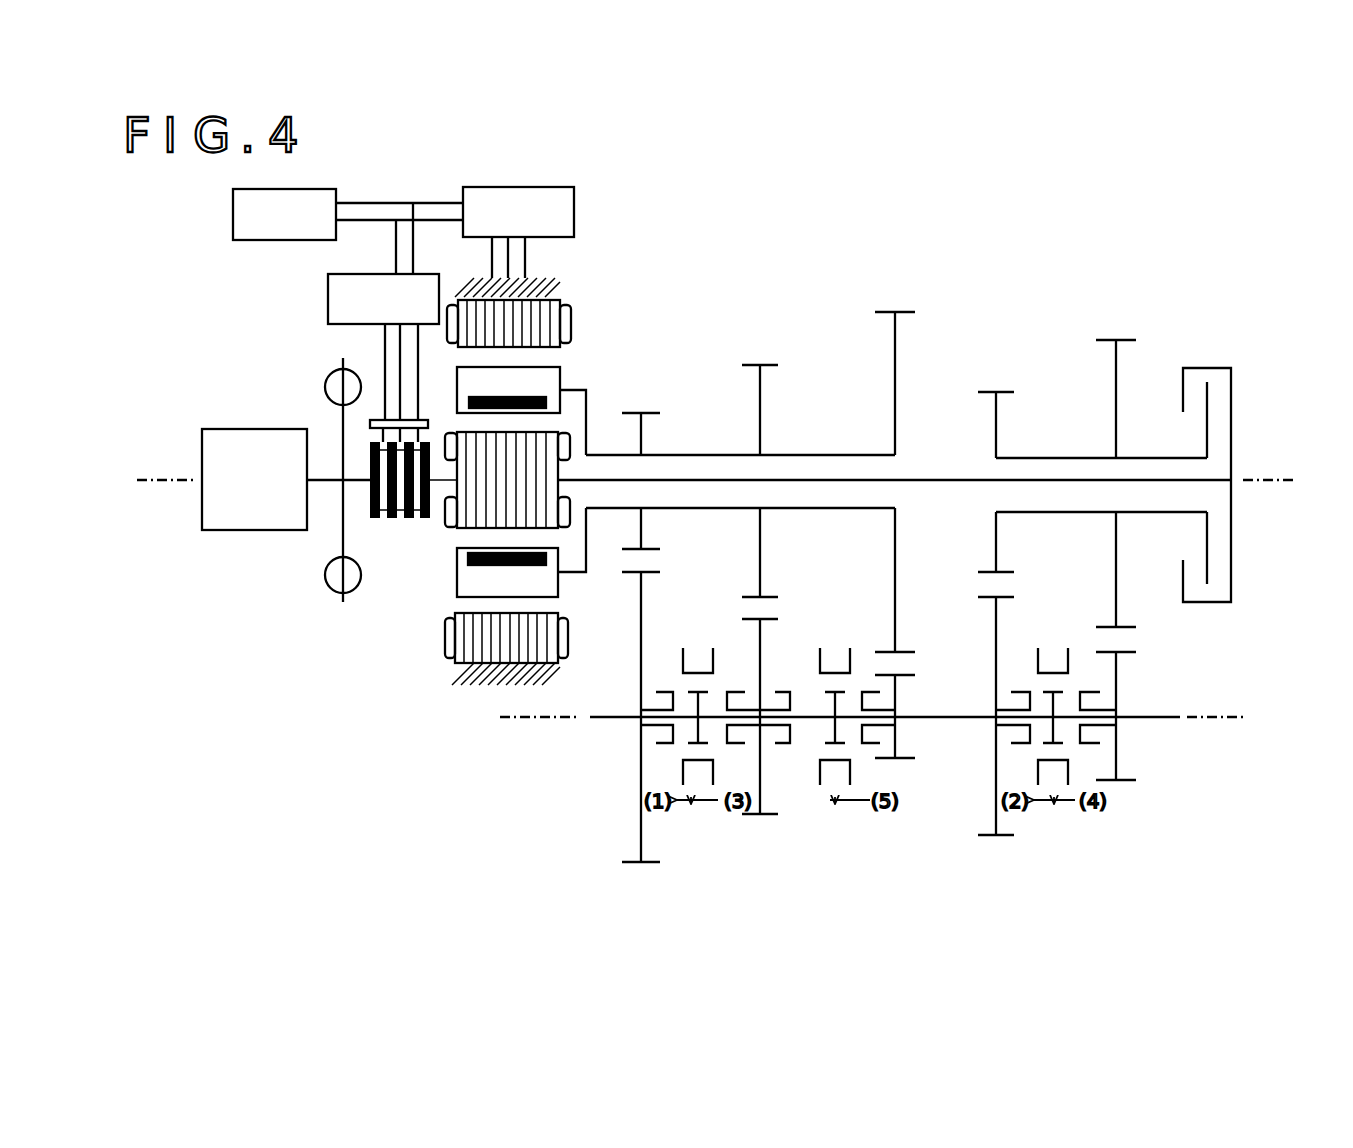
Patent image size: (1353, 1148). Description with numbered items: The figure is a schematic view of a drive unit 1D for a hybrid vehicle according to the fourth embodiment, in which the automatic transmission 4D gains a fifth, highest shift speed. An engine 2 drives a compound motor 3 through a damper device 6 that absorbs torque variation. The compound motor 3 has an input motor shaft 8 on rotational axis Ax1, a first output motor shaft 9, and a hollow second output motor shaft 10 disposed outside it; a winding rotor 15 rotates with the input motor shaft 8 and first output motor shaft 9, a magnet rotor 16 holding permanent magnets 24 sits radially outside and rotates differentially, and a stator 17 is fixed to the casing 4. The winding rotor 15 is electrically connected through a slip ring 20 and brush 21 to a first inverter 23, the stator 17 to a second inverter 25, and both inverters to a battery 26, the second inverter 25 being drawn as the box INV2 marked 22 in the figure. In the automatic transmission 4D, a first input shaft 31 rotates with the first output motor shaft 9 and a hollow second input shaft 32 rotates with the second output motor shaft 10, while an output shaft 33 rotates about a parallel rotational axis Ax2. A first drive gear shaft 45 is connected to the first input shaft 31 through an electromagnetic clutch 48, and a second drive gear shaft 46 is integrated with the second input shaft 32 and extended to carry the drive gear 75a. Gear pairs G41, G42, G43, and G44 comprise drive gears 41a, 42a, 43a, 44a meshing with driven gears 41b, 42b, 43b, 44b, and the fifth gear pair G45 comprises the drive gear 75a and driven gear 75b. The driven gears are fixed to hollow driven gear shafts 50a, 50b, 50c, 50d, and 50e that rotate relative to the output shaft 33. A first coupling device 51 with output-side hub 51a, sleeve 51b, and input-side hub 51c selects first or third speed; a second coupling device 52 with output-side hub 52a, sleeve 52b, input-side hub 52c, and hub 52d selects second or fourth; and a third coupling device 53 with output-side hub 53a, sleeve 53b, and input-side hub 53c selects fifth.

The drive unit 1D is at (713, 198).
The engine 2 is at (222, 429).
The compound motor 3 is at (527, 445).
The casing 4 is at (560, 288).
The automatic transmission 4D is at (1038, 230).
The damper device 6 is at (330, 375).
The input motor shaft 8 is at (444, 500).
The first output motor shaft 9 is at (580, 500).
The second output motor shaft 10 is at (586, 392).
The winding rotor 15 is at (455, 437).
The magnet rotor 16 is at (485, 367).
The stator 17 is at (571, 318).
The slip ring 20 is at (377, 520).
The brush 21 is at (378, 416).
The second inverter 22 is at (518, 212).
The first inverter 23 is at (328, 296).
The permanent magnets 24 is at (478, 397).
The second inverter 25 is at (463, 234).
The battery 26 is at (233, 212).
The first input shaft 31 is at (952, 480).
The second input shaft 32 is at (606, 452).
The output shaft 33 is at (1160, 717).
The drive gear 41a is at (641, 433).
The driven gear 41b is at (641, 592).
The drive gear 42a is at (996, 413).
The driven gear 42b is at (996, 617).
The drive gear 43a is at (760, 400).
The driven gear 43b is at (765, 630).
The drive gear 44a is at (1116, 350).
The driven gear 44b is at (1116, 770).
The first drive gear shaft 45 is at (1060, 512).
The second drive gear shaft 46 is at (706, 512).
The clutch 48 is at (1208, 368).
The driven gear shaft 50a is at (655, 700).
The driven gear shaft 50b is at (1005, 738).
The driven gear shaft 50c is at (745, 728).
The driven gear shaft 50d is at (1090, 688).
The driven gear shaft 50e is at (893, 728).
The first coupling device 51 is at (689, 690).
The output-side hub 51a is at (690, 745).
The sleeve 51b is at (682, 656).
The input-side hub 51c is at (668, 690).
The second coupling device 52 is at (1060, 675).
The output-side hub 52a is at (1085, 733).
The sleeve 52b is at (1072, 656).
The input-side hub 52c is at (1025, 690).
The output-side hub 52d is at (1116, 627).
The third coupling device 53 is at (866, 684).
The output-side hub 53a is at (825, 705).
The sleeve 53b is at (820, 662).
The input-side hub 53c is at (900, 690).
The drive gear 75a is at (895, 355).
The driven gear 75b is at (905, 703).
The first gear pair G41 is at (643, 394).
The second gear pair G42 is at (1000, 377).
The third gear pair G43 is at (757, 338).
The fourth gear pair G44 is at (1118, 319).
The fifth gear pair G45 is at (895, 300).
The rotational axis Ax1 is at (168, 478).
The rotational axis Ax2 is at (512, 720).